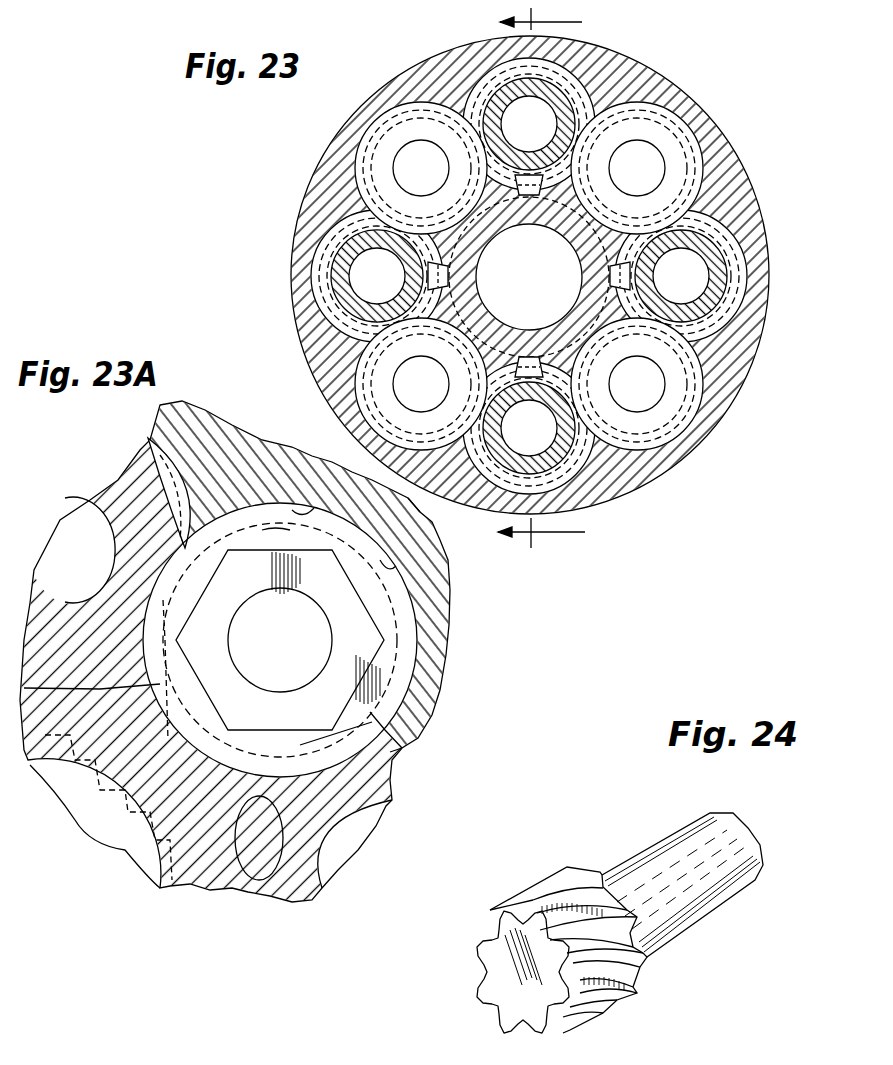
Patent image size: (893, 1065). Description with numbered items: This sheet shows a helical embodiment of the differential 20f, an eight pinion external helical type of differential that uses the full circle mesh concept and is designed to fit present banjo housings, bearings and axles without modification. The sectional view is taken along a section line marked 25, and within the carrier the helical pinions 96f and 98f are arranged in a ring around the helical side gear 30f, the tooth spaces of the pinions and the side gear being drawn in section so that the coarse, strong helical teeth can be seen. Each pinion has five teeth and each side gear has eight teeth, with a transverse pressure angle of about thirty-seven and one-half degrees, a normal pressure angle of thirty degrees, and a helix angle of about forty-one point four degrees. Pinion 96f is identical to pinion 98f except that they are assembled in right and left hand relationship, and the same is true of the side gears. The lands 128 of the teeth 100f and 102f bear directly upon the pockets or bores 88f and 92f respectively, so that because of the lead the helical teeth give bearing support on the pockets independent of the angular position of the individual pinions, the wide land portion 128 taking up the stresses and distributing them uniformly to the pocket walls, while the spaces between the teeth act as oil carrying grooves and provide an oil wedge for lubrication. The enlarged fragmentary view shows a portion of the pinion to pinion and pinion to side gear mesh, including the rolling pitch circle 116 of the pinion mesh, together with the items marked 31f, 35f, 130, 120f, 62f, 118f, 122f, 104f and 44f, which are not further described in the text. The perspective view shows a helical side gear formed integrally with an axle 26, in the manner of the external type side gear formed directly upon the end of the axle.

In FIG. 23, the differential 20f is at (755, 457).
In FIG. 23, the section line 25 is at (541, 279).
In FIG. 23, the side gear 30f is at (637, 384).
In FIG. 23, the central shaft bore 31f is at (537, 268).
In FIG. 23A, the central shaft bore 31f is at (128, 845).
In FIG. 23, the pinion 96f is at (662, 148).
In FIG. 23A, the pinion 96f is at (348, 620).
In FIG. 23, the pinion 98f is at (720, 272).
In FIG. 23A, the pinion 98f is at (345, 800).
In FIG. 23A, the housing 35f is at (185, 432).
In FIG. 23A, the groove 130 is at (274, 530).
In FIG. 23A, the pocket or bore 88f is at (303, 505).
In FIG. 23A, the helical teeth 100f is at (420, 513).
In FIG. 23A, the peripheral lands 128 is at (388, 566).
In FIG. 23A, the rolling pitch circle 116 is at (165, 632).
In FIG. 23A, the roller bore 120f is at (232, 630).
In FIG. 23A, the hexagonal socket 62f is at (280, 640).
In FIG. 23A, the socket face 118f is at (327, 703).
In FIG. 23A, the helical teeth 102f is at (392, 752).
In FIG. 23A, the adjacent roller 122f is at (345, 828).
In FIG. 23A, the bore 104f is at (130, 775).
In FIG. 23A, the passage 44f is at (168, 880).
In FIG. 23A, the pocket or bore 92f is at (282, 888).
In FIG. 24, the axle 26 is at (652, 860).